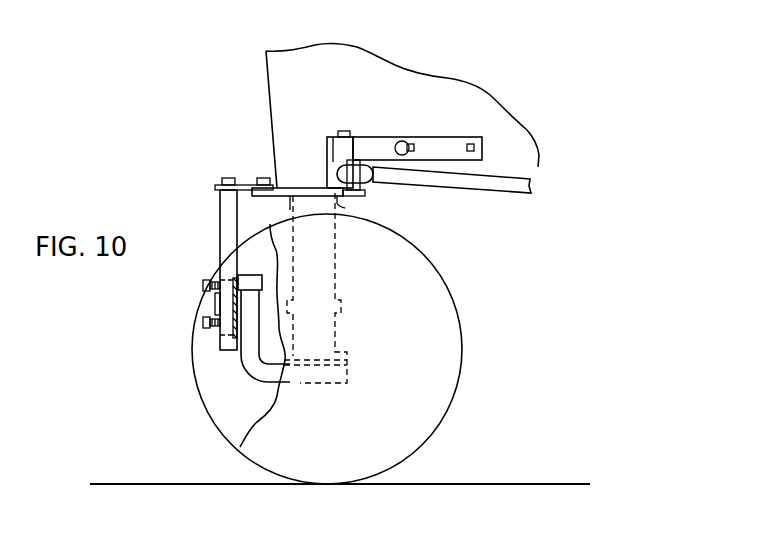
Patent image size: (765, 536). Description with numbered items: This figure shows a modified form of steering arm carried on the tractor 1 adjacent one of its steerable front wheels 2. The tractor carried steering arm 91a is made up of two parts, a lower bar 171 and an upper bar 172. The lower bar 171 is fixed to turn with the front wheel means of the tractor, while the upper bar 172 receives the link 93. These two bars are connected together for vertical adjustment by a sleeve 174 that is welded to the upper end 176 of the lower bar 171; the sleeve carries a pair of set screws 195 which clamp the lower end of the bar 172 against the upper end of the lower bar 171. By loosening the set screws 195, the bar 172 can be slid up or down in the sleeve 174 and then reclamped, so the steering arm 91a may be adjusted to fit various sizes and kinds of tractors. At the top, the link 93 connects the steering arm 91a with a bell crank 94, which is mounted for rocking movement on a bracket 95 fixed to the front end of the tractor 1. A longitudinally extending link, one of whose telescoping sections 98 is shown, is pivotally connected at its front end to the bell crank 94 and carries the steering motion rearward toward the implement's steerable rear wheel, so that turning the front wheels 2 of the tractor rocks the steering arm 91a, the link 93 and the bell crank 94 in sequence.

The tractor 1 is at (258, 64).
The steerable front wheels 2 is at (240, 446).
The link 93 is at (243, 183).
The bell crank 94 is at (293, 187).
The bracket 95 is at (377, 146).
The telescoping section 98 is at (468, 185).
The lower bar 171 is at (242, 371).
The bar 172 is at (224, 227).
The sleeve 174 is at (230, 305).
The upper end 176 is at (250, 284).
The set screws 195 is at (203, 284).
The steering arm 91a is at (208, 268).